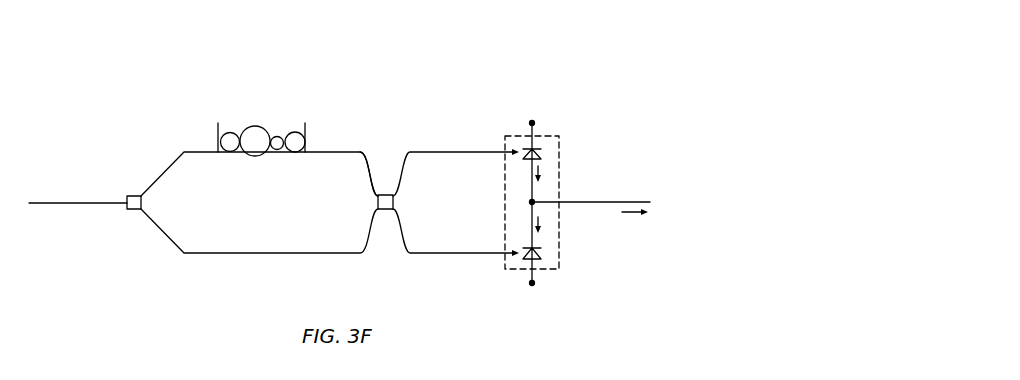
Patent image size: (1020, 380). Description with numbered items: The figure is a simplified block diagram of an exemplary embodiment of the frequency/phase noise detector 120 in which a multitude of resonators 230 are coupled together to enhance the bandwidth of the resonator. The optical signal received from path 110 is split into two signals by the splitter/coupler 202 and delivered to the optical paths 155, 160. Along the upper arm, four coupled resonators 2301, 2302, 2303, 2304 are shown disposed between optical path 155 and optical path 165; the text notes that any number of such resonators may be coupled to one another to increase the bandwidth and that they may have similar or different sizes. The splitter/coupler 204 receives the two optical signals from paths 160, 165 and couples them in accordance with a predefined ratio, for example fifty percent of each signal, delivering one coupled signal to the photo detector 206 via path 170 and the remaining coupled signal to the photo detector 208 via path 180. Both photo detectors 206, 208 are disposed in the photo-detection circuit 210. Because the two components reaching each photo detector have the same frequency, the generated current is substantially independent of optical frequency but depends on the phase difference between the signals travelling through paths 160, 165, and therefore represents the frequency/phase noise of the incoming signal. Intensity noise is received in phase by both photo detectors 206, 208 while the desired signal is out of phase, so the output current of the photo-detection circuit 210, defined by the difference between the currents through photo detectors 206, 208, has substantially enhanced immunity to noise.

The frequency/phase noise detector 120 is at (657, 86).
The path 110 is at (80, 205).
The splitter/coupler 202 is at (134, 211).
The optical path 155 is at (163, 170).
The optical path 160 is at (163, 238).
The resonators 230 is at (277, 118).
The resonator 2301 is at (231, 132).
The resonator 2302 is at (253, 126).
The resonator 2303 is at (279, 134).
The resonator 2304 is at (305, 126).
The optical path 165 is at (377, 175).
The splitter/coupler 204 is at (385, 213).
The path 170 is at (450, 150).
The path 180 is at (450, 256).
The photo detector 206 is at (540, 155).
The photo detector 208 is at (540, 257).
The photo-detection circuit 210 is at (559, 184).